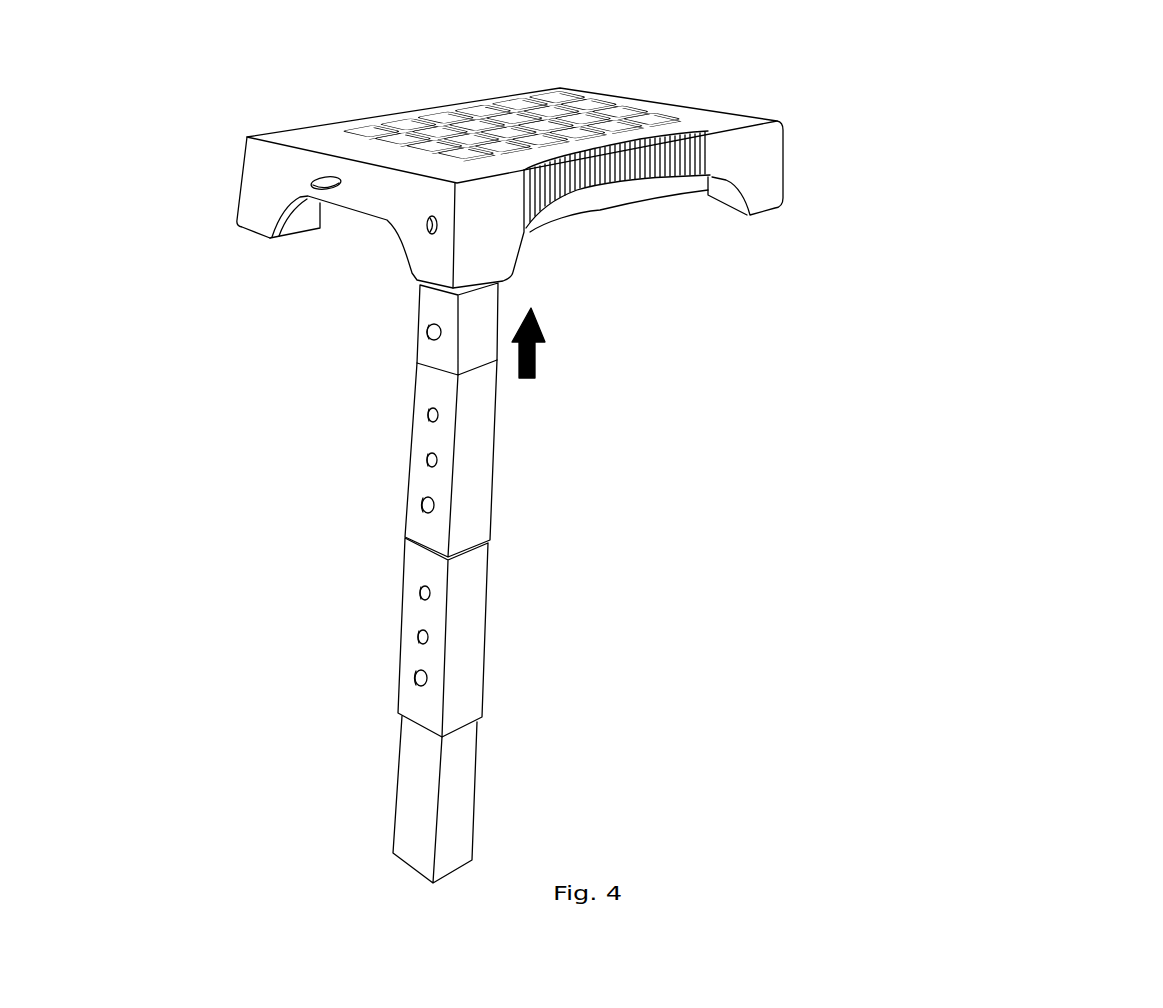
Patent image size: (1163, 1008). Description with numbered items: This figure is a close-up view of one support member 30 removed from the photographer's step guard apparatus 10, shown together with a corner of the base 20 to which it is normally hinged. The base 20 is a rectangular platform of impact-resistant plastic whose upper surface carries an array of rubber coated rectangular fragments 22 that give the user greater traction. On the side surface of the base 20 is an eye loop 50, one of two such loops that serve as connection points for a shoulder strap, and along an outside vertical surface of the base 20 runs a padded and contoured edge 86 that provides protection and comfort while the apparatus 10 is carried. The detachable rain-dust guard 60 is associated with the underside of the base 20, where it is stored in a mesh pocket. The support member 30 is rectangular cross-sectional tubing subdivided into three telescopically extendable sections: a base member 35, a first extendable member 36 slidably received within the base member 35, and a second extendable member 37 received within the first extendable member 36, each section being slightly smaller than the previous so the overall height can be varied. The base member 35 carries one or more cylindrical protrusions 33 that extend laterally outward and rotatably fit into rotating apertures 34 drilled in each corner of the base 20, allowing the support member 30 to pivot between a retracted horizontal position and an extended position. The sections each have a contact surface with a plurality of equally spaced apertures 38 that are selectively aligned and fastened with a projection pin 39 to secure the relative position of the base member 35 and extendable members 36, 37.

The photographer's step guard apparatus 10 is at (1030, 137).
The base 20 is at (766, 175).
The rubber coated rectangular fragments 22 is at (688, 108).
The support member 30 is at (370, 808).
The cylindrical protrusion 33 is at (426, 334).
The rotating aperture 34 is at (426, 229).
The base member 35 is at (481, 492).
The first extendable member 36 is at (467, 663).
The second extendable member 37 is at (460, 815).
The apertures 38 is at (426, 461).
The projection pin 39 is at (421, 507).
The eye loop 50 is at (311, 184).
The rain-dust guard 60 is at (567, 208).
The padded and contoured edge 86 is at (617, 170).